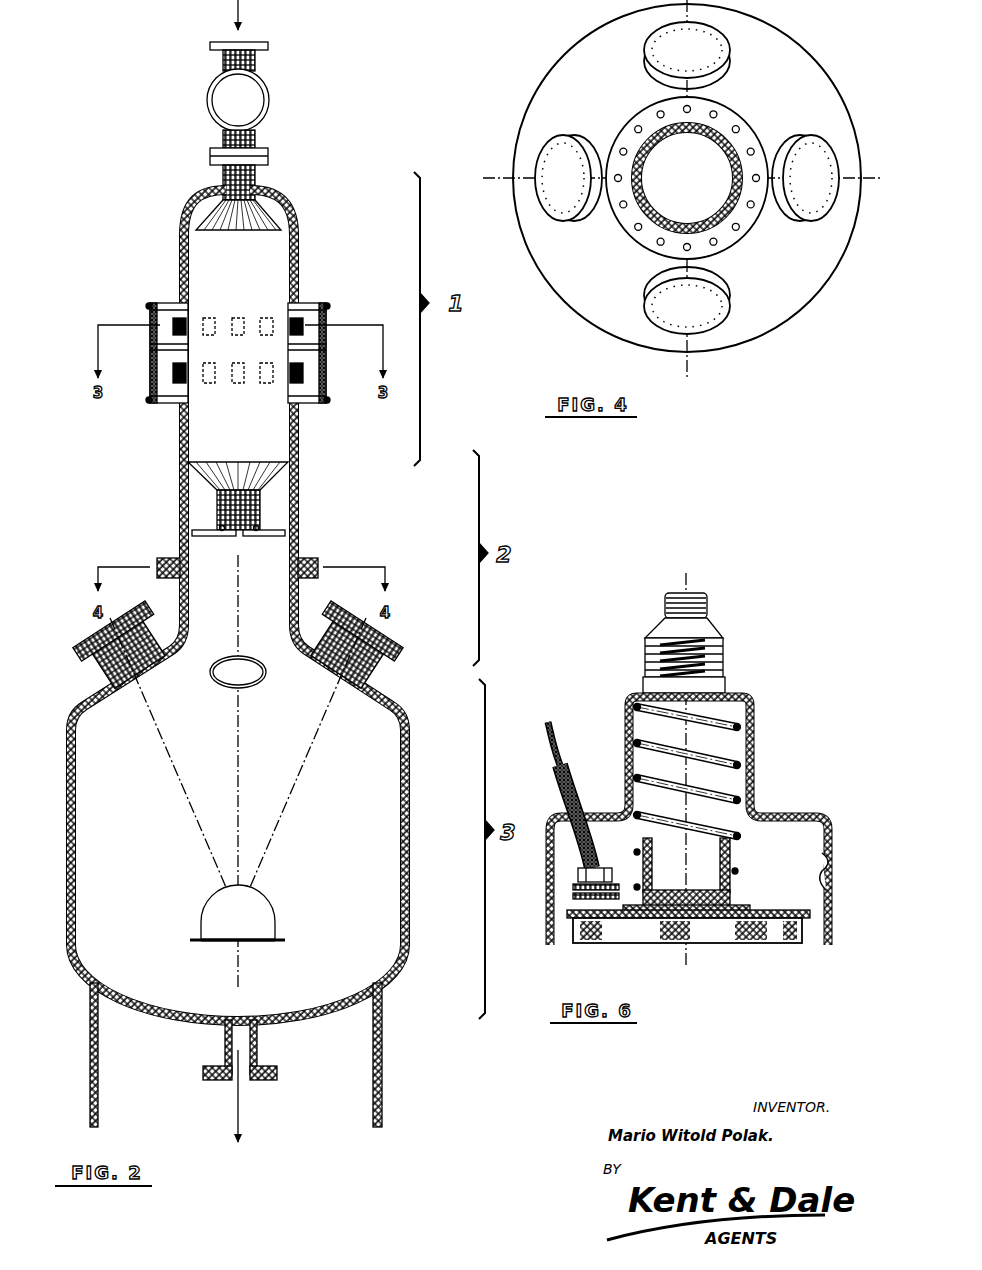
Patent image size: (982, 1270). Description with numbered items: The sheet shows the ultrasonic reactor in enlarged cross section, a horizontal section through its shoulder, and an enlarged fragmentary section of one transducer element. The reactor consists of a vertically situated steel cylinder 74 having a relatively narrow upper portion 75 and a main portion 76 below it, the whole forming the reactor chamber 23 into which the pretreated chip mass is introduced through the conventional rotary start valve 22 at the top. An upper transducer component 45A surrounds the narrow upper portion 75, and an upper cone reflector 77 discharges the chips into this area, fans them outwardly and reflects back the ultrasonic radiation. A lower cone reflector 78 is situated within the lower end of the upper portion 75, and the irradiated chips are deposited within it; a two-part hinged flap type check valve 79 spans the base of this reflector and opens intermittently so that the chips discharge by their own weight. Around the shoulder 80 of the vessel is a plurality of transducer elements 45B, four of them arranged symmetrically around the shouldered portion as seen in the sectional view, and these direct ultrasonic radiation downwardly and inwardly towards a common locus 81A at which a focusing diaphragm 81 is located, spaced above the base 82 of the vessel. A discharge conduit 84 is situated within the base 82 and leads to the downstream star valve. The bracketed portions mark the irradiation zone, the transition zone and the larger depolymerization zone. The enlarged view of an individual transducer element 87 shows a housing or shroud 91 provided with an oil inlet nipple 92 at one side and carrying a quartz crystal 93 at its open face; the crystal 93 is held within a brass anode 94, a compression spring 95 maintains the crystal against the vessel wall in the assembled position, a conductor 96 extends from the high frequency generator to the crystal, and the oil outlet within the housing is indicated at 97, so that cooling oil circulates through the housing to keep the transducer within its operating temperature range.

In FIG. 2, the rotary start valve 22 is at (246, 98).
In FIG. 2, the reactor chamber 23 is at (298, 226).
In FIG. 2, the upper cone reflector 77 is at (243, 220).
In FIG. 2, the narrow upper portion 75 is at (298, 262).
In FIG. 2, the upper transducer component 45A is at (323, 330).
In FIG. 2, the lower cone reflector 78 is at (257, 470).
In FIG. 2, the two-part hinged flap type check valve 79 is at (203, 548).
In FIG. 2, the shoulder 80 is at (403, 700).
In FIG. 4, the shoulder 80 is at (605, 53).
In FIG. 2, the transducer elements 45B is at (388, 641).
In FIG. 4, the transducer elements 45B is at (556, 166).
In FIG. 2, the steel cylinder 74 is at (68, 915).
In FIG. 2, the main portion 76 is at (408, 806).
In FIG. 2, the base 82 is at (330, 1012).
In FIG. 2, the focusing diaphragm 81 is at (200, 913).
In FIG. 2, the common locus 81A is at (278, 932).
In FIG. 2, the discharge conduit 84 is at (225, 1040).
In FIG. 6, the oil inlet nipple 92 is at (660, 612).
In FIG. 6, the compression spring 95 is at (722, 722).
In FIG. 6, the transducer element 87 is at (765, 820).
In FIG. 6, the housing or shroud 91 is at (552, 937).
In FIG. 6, the conductor 96 is at (553, 724).
In FIG. 6, the brass anode 94 is at (737, 904).
In FIG. 6, the quartz crystal 93 is at (718, 933).
In FIG. 6, the oil outlet 97 is at (770, 858).